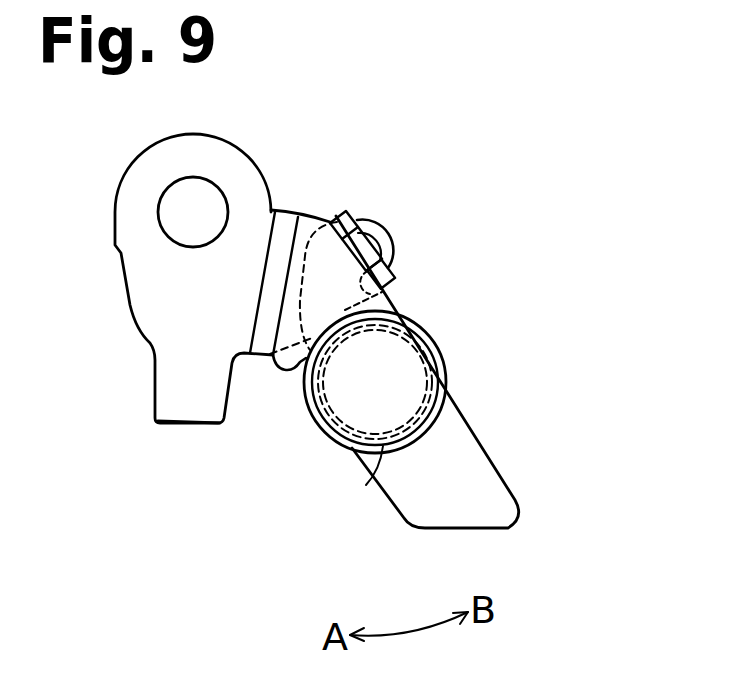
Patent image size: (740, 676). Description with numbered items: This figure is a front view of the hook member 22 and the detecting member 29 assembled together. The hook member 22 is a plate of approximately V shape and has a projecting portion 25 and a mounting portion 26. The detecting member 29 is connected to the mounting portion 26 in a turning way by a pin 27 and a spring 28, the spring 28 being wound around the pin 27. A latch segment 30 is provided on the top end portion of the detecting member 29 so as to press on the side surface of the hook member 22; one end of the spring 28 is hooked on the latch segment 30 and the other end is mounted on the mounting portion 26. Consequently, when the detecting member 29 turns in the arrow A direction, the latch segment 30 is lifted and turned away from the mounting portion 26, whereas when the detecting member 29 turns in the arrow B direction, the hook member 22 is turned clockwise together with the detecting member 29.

The hook member 22 is at (252, 170).
The projecting portion 25 is at (190, 427).
The mounting portion 26 is at (298, 367).
The pin 27 is at (437, 345).
The spring 28 is at (366, 485).
The detecting member 29 is at (505, 487).
The latch segment 30 is at (351, 217).